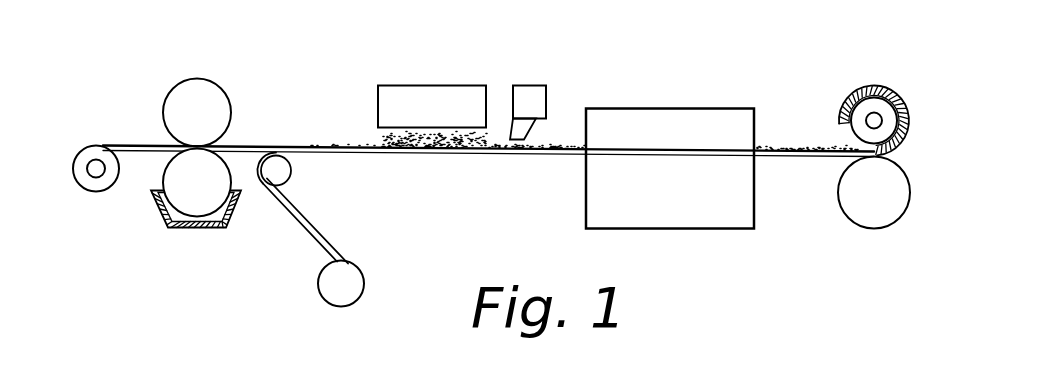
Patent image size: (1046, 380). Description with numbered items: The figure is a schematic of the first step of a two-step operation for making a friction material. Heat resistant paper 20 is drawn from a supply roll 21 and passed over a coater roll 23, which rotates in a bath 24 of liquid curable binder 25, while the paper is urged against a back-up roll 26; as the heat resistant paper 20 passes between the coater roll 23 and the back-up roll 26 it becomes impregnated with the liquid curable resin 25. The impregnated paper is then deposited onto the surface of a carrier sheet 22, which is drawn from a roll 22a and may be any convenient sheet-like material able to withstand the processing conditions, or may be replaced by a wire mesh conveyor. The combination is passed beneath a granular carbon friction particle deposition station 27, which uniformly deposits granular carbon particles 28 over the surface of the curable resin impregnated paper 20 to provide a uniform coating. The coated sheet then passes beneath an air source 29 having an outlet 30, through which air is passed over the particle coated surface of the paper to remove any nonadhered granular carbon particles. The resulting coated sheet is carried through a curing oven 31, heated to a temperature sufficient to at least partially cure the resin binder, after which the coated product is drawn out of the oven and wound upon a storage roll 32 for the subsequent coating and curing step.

The heat resistant paper 20 is at (130, 143).
The supply roll 21 is at (87, 187).
The carrier sheet 22 is at (355, 157).
The roll 22a is at (320, 284).
The coater roll 23 is at (172, 175).
The bath 24 is at (167, 212).
The liquid curable binder 25 is at (227, 223).
The back-up roll 26 is at (222, 100).
The granular carbon friction particle deposition station 27 is at (440, 88).
The granular carbon particles 28 is at (378, 138).
The air source 29 is at (530, 88).
The outlet 30 is at (523, 145).
The curing oven 31 is at (670, 115).
The storage roll 32 is at (860, 105).